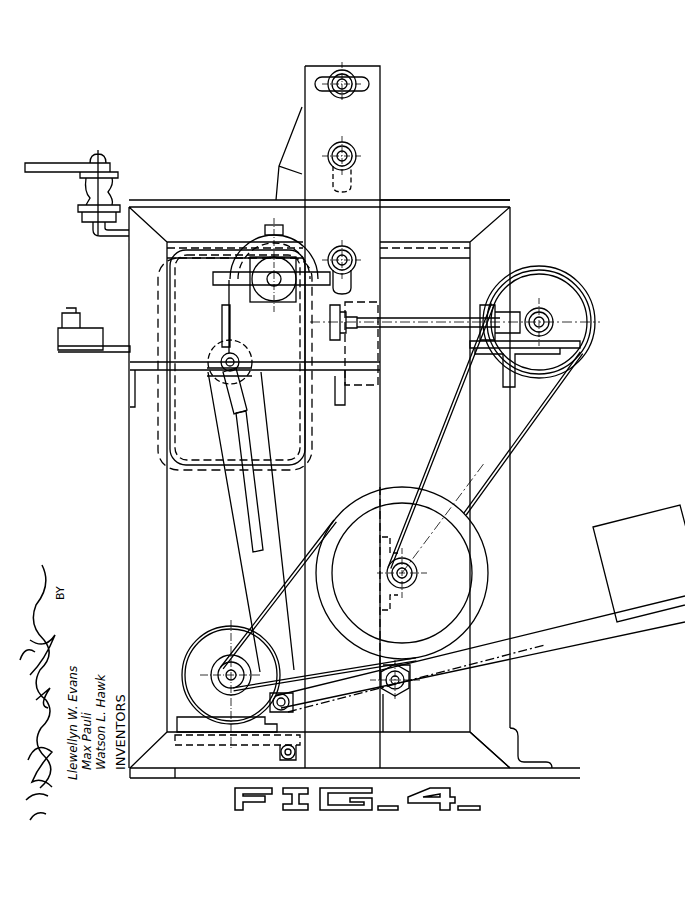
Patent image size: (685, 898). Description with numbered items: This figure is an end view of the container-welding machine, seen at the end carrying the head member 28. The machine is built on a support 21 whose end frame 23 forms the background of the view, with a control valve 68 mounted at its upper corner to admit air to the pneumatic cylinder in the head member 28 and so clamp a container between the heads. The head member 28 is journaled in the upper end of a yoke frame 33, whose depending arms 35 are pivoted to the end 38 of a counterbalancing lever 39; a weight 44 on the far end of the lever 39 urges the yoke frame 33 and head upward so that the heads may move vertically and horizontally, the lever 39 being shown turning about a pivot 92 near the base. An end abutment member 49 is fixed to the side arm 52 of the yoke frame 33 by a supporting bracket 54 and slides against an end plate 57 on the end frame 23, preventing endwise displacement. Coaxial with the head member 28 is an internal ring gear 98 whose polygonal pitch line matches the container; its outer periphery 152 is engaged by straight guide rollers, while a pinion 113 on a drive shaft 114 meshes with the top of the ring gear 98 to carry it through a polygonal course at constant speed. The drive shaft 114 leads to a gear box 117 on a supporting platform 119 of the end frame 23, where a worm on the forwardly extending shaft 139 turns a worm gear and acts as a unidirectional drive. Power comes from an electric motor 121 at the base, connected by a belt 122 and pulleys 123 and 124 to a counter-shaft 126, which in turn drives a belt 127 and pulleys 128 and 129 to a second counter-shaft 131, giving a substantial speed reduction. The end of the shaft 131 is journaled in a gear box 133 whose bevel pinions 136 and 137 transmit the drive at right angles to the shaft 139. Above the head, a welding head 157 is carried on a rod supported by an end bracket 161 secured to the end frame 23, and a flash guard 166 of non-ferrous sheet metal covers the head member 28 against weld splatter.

The support 21 is at (528, 709).
The end frame 23 is at (512, 510).
The head member 28 is at (215, 485).
The yoke frame 33 is at (219, 511).
The depending arms 35 is at (296, 655).
The lever end 38 is at (316, 710).
The counterbalancing lever 39 is at (530, 633).
The weight 44 is at (633, 525).
The end abutment member 49 is at (222, 358).
The side arm 52 is at (252, 530).
The supporting bracket 54 is at (226, 392).
The end plate 57 is at (378, 361).
The control valve 68 is at (118, 190).
The pivot 92 is at (412, 678).
The internal ring gear 98 is at (172, 440).
The pinion 113 is at (241, 294).
The drive shaft 114 is at (225, 272).
The gear box 117 is at (240, 320).
The supporting platform 119 is at (332, 392).
The electric motor 121 is at (195, 661).
The belt 122 is at (262, 606).
The pulley 123 is at (226, 652).
The pulley 124 is at (362, 500).
The counter-shaft 126 is at (412, 582).
The belt 127 is at (524, 440).
The pulley 128 is at (420, 555).
The pulley 129 is at (578, 300).
The second counter-shaft 131 is at (556, 320).
The gear box 133 is at (585, 345).
The bevel pinion 136 is at (548, 312).
The bevel pinion 137 is at (525, 310).
The forwardly extending shaft 139 is at (426, 318).
The outer periphery of ring gear 152 is at (160, 292).
The welding head 157 is at (292, 145).
The end bracket 161 is at (372, 148).
The flash guard 166 is at (454, 200).